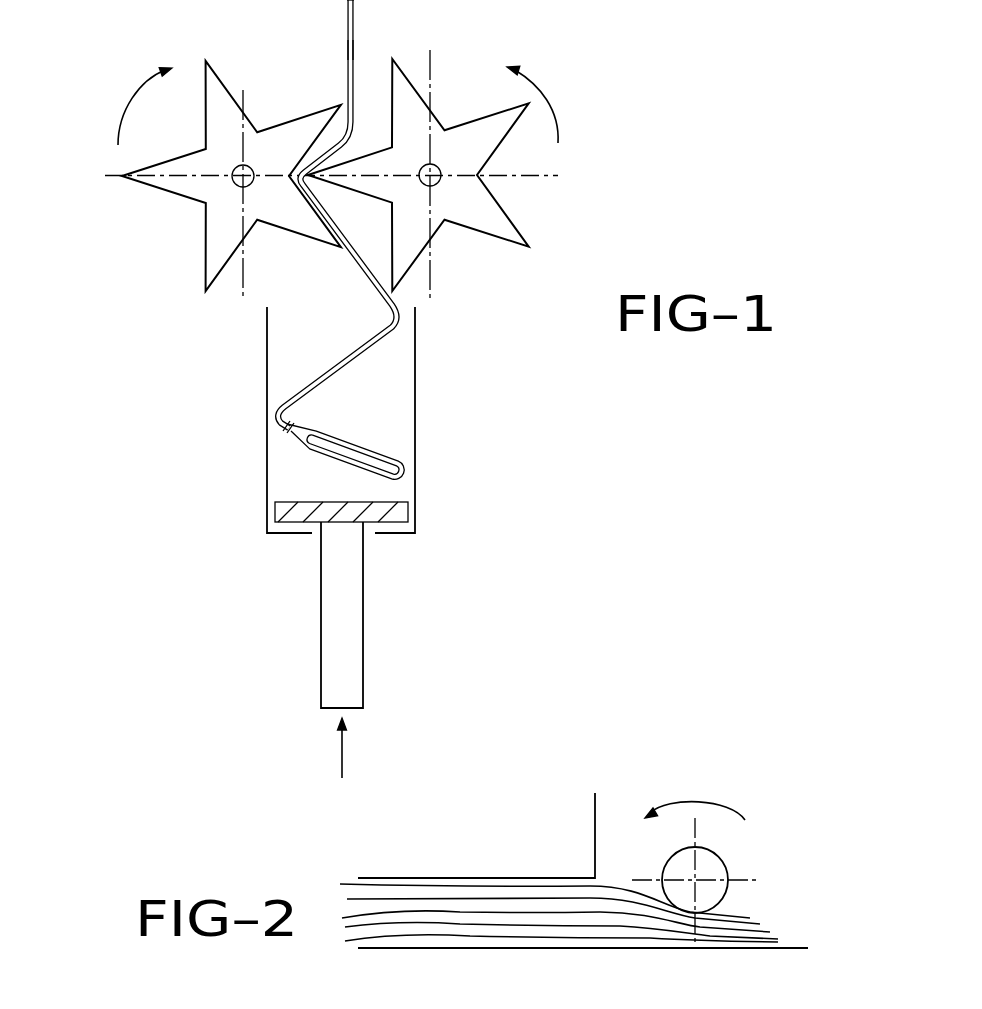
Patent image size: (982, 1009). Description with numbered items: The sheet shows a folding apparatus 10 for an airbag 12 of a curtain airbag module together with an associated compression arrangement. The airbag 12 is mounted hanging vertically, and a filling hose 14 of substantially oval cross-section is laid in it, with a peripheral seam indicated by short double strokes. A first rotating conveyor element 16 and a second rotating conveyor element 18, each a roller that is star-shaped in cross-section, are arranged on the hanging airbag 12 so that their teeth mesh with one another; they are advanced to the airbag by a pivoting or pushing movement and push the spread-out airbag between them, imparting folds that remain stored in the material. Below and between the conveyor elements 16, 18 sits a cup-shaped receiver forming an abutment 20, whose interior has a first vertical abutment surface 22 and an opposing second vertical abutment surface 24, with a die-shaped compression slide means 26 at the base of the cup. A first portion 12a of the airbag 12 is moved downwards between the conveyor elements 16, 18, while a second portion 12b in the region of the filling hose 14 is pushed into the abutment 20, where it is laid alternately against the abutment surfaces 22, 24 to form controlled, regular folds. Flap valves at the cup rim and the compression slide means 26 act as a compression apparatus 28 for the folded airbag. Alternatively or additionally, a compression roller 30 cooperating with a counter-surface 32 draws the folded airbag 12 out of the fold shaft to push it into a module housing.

In FIG. 1, the folding apparatus 10 is at (97, 240).
In FIG. 1, the airbag 12 is at (379, 216).
In FIG. 1, the first portion of the airbag 12a is at (347, 100).
In FIG. 1, the second portion of the airbag 12b is at (378, 360).
In FIG. 1, the filling hose 14 is at (398, 466).
In FIG. 1, the first rotating conveyor element 16 is at (206, 258).
In FIG. 1, the second rotating conveyor element 18 is at (518, 230).
In FIG. 1, the abutment 20 is at (320, 420).
In FIG. 2, the abutment 20 is at (540, 949).
In FIG. 1, the first vertical abutment surface 22 is at (268, 391).
In FIG. 1, the second vertical abutment surface 24 is at (415, 368).
In FIG. 1, the compression slide means 26 is at (364, 617).
In FIG. 1, the compression apparatus 28 is at (295, 572).
In FIG. 2, the compression apparatus 28 is at (765, 827).
In FIG. 2, the compression roller 30 is at (727, 867).
In FIG. 2, the counter-surface 32 is at (698, 949).